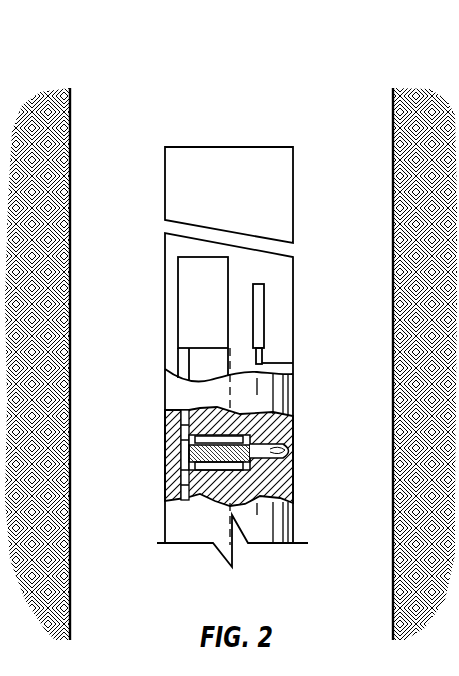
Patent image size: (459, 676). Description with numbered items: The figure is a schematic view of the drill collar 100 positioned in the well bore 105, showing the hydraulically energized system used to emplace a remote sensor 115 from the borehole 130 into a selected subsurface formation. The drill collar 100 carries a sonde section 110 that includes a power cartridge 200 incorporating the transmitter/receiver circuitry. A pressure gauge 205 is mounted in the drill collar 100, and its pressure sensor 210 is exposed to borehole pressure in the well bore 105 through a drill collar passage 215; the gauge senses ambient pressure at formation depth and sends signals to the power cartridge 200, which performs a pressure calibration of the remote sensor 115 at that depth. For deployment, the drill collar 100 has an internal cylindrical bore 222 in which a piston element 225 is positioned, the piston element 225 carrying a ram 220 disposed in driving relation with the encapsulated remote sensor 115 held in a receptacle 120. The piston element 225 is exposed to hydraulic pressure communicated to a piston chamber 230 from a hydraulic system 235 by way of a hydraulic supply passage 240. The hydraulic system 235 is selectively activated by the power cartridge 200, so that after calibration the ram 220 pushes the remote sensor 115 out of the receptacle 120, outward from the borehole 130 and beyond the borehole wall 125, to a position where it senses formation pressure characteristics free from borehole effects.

The drill collar 100 is at (162, 207).
The well bore 105 is at (200, 53).
The sonde section 110 is at (285, 290).
The remote sensor 115 is at (228, 451).
The receptacle 120 is at (273, 448).
The borehole wall 125 is at (393, 118).
The borehole 130 is at (127, 98).
The power cartridge 200 is at (280, 212).
The pressure gauge 205 is at (260, 313).
The pressure sensor 210 is at (262, 353).
The drill collar passage 215 is at (293, 365).
The hydraulically energized ram 220 is at (195, 452).
The internal cylindrical bore 222 is at (242, 465).
The piston element 225 is at (188, 430).
The piston chamber 230 is at (183, 467).
The hydraulic system 235 is at (192, 273).
The hydraulic supply passage 240 is at (183, 358).